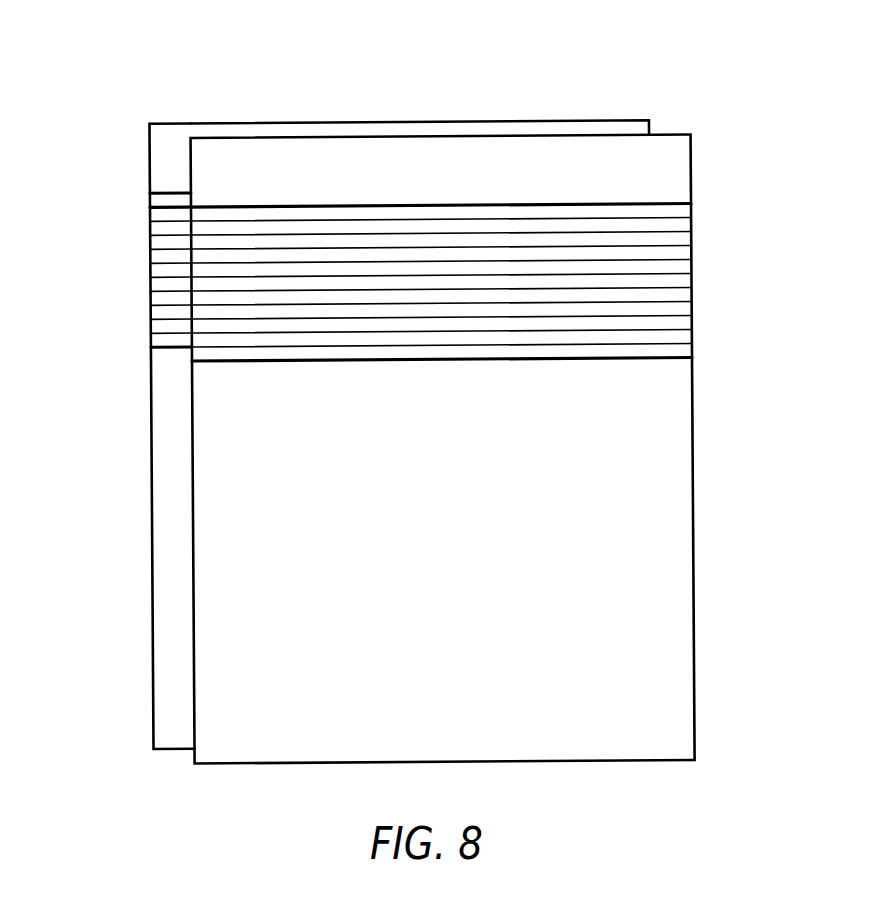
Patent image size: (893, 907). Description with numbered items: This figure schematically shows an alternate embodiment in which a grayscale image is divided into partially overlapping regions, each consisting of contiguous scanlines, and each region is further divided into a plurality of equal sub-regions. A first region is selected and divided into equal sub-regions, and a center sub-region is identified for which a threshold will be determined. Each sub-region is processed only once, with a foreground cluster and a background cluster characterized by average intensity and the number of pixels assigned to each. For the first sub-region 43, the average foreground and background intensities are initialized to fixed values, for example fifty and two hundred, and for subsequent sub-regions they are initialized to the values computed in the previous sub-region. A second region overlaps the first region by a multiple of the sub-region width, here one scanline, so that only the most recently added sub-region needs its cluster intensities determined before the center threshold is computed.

The first sub-region 43 is at (152, 201).